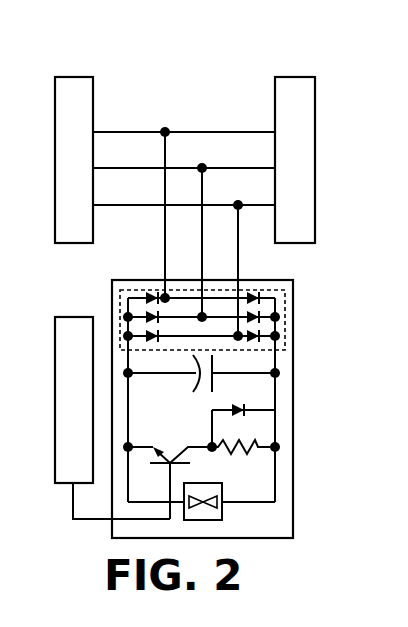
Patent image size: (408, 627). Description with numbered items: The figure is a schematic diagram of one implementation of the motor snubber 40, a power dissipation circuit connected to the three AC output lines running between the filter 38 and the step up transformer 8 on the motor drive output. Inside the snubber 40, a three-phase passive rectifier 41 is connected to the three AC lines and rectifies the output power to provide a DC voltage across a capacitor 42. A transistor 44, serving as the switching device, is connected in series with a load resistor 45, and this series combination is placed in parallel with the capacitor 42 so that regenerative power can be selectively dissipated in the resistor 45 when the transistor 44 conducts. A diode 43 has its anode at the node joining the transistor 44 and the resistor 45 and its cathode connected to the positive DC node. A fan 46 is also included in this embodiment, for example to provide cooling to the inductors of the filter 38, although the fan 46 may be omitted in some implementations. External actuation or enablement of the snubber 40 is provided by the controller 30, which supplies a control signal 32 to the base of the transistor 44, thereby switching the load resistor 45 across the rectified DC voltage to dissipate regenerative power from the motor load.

The transformer 8 is at (294, 77).
The controller 30 is at (86, 317).
The control signal 32 is at (73, 504).
The filter 38 is at (70, 77).
The motor snubber 40 is at (120, 280).
The three-phase passive rectifier 41 is at (280, 290).
The capacitor 42 is at (201, 379).
The diode 43 is at (243, 414).
The transistor 44 is at (170, 473).
The load resistor 45 is at (246, 460).
The fan 46 is at (222, 510).